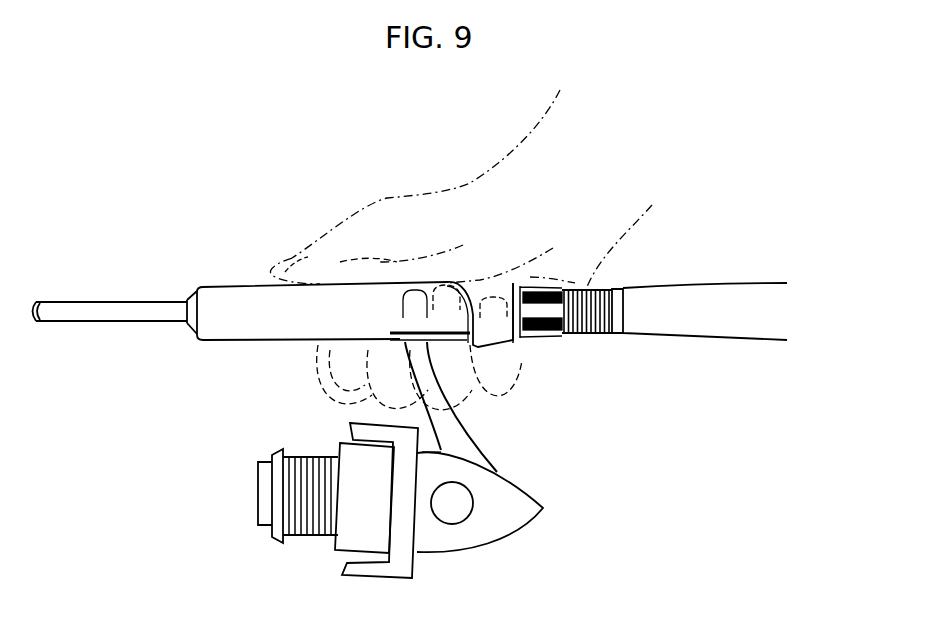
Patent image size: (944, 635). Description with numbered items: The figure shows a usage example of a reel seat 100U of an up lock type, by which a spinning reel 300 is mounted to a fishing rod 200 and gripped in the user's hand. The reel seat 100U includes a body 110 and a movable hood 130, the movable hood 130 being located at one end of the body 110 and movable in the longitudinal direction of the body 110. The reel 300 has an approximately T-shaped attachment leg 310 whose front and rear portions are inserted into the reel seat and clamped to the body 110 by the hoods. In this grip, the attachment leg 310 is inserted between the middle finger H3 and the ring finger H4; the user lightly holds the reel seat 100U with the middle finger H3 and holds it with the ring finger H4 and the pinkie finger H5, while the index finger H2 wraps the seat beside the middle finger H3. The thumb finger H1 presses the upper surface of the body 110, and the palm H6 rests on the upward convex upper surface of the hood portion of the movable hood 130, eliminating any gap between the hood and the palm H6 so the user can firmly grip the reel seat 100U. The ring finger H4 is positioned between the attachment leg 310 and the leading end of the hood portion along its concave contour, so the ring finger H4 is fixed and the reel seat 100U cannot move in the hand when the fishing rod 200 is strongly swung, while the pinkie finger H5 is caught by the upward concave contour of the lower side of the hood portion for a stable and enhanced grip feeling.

The body 110 is at (217, 295).
The movable hood 130 is at (545, 345).
The reel seat of an up lock type 100U is at (310, 345).
The fishing rod 200 is at (103, 328).
The spinning reel 300 is at (535, 481).
The attachment leg 310 is at (448, 412).
The thumb finger H1 is at (293, 262).
The index finger H2 is at (348, 290).
The middle finger H3 is at (390, 290).
The ring finger H4 is at (443, 285).
The pinkie finger H5 is at (493, 293).
The palm H6 is at (530, 260).